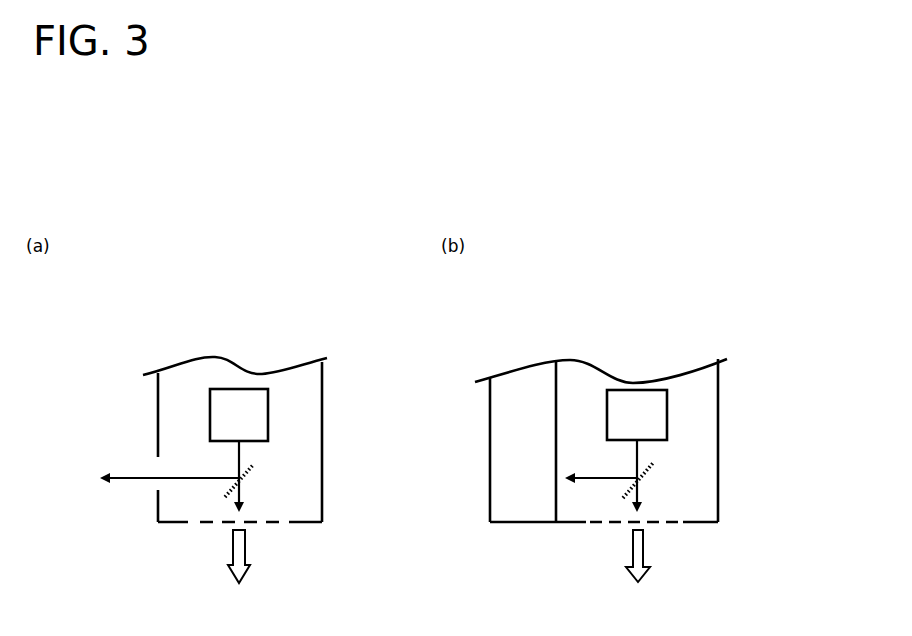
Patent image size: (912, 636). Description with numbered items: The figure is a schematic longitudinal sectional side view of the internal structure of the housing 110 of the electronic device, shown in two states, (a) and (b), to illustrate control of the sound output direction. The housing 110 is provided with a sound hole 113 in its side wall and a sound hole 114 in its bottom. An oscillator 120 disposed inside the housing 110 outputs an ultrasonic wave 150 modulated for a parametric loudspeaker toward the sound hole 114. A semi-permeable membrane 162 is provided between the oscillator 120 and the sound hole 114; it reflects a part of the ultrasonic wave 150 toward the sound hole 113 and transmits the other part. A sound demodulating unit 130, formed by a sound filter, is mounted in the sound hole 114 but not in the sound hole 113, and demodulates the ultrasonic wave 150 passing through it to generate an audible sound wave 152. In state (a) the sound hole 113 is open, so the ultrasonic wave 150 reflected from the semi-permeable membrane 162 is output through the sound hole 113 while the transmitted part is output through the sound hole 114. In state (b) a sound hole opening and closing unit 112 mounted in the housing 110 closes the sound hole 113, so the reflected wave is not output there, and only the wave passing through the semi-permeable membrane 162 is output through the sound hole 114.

The housing 110 is at (292, 380).
The sound hole opening and closing unit 112 is at (513, 370).
The sound hole 113 is at (155, 469).
The sound hole 114 is at (205, 532).
The oscillator 120 is at (270, 423).
The sound demodulating unit 130 is at (273, 523).
The ultrasonic wave 150 is at (142, 480).
The audible sound wave 152 is at (248, 552).
The semi-permeable membrane 162 is at (255, 470).